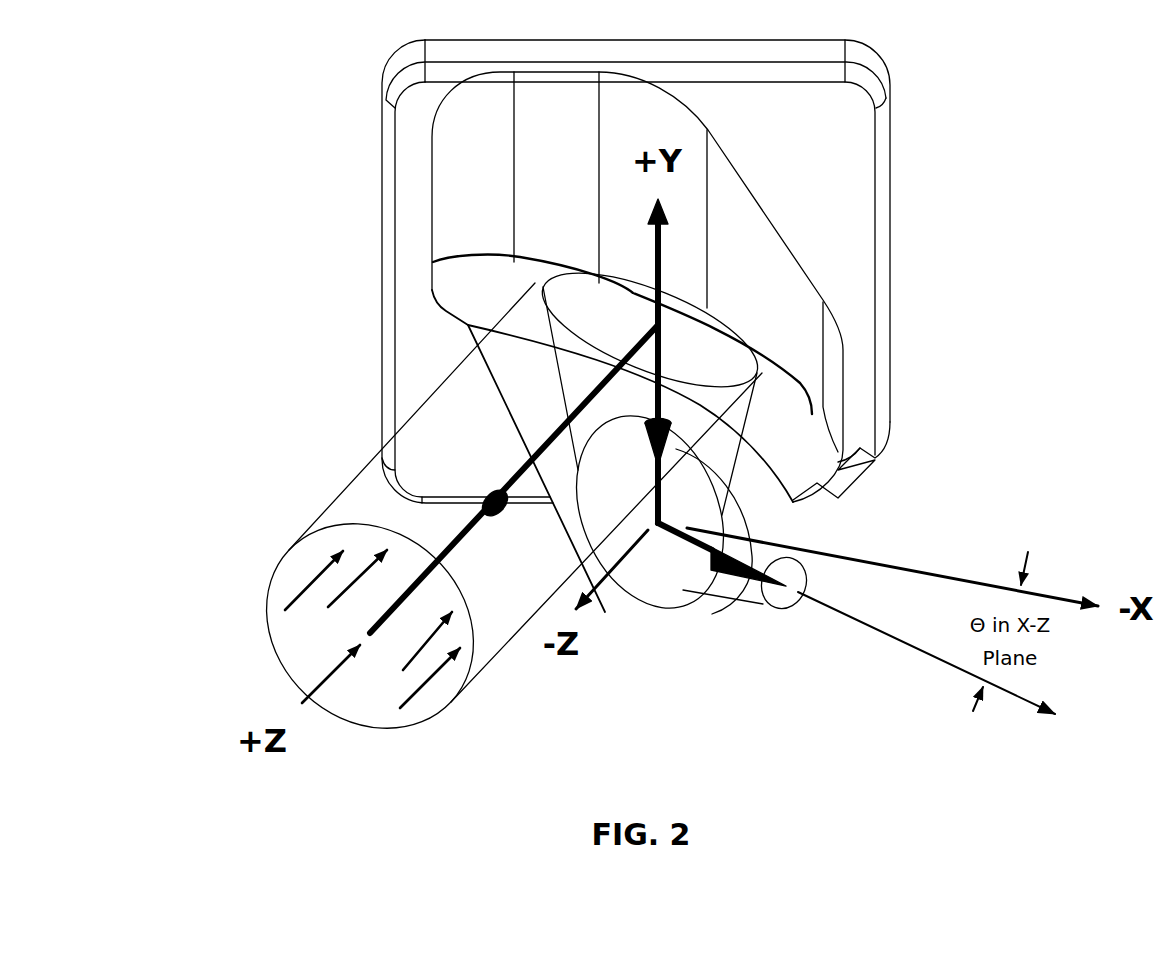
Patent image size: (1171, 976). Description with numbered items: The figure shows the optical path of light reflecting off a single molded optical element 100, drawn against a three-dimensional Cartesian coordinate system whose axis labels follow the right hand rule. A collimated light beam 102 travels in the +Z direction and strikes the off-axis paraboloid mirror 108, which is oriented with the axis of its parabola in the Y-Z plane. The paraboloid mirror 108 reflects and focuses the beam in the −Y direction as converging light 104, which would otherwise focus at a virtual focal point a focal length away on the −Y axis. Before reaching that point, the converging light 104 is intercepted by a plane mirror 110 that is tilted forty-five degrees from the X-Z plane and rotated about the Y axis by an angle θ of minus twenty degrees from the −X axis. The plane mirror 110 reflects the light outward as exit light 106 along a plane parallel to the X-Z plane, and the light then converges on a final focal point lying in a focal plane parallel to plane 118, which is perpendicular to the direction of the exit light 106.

The single molded optical element 100 is at (378, 88).
The collimated light beam 102 is at (343, 491).
The converging light 104 is at (752, 420).
The exit light 106 is at (883, 630).
The off-axis paraboloid mirror 108 is at (490, 293).
The plane mirror 110 is at (762, 480).
The plane 118 is at (772, 612).